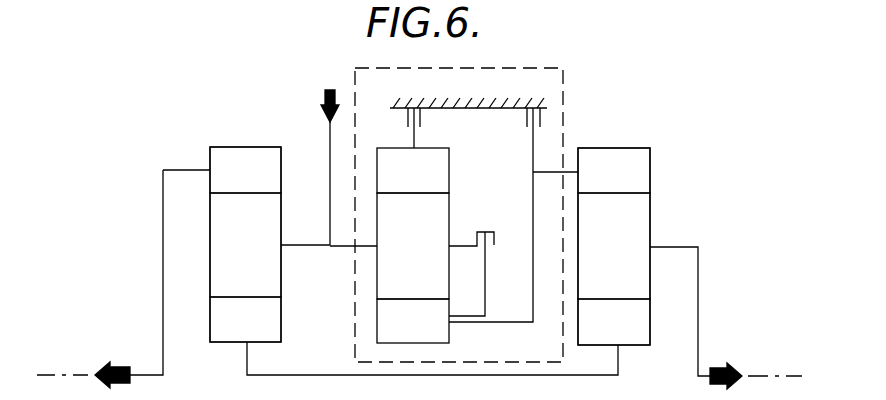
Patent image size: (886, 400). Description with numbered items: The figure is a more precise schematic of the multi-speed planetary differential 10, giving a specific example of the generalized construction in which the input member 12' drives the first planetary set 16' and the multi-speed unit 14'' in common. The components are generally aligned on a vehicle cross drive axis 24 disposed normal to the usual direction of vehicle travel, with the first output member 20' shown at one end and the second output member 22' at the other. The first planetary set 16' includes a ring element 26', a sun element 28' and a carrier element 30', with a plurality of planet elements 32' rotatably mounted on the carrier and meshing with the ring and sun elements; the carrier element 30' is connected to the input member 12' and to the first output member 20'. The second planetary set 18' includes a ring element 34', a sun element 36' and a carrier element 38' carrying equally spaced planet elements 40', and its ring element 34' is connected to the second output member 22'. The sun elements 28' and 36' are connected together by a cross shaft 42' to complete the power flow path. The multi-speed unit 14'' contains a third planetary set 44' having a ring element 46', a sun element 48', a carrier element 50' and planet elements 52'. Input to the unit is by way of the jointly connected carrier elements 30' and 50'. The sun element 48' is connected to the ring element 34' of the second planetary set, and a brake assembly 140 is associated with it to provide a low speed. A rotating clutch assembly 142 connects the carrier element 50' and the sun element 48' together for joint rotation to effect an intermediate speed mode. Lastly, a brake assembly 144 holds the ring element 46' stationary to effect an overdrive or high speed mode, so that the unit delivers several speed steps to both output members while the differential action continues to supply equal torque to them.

The multi-speed planetary differential 10 is at (168, 98).
The input member 12' is at (312, 167).
The multi-speed unit 14'' is at (500, 210).
The first planetary set 16' is at (243, 220).
The second planetary set 18' is at (619, 222).
The first output member 20' is at (152, 279).
The second output member 22' is at (752, 360).
The vehicle cross drive axis 24 is at (71, 372).
The ring element 26' is at (245, 170).
The sun element 28' is at (245, 319).
The carrier element 30' is at (279, 225).
The planet elements 32' is at (245, 245).
The ring element 34' is at (614, 170).
The sun element 36' is at (614, 322).
The carrier element 38' is at (682, 291).
The planet elements 40' is at (614, 246).
The cross shaft 42' is at (432, 356).
The third planetary set 44' is at (461, 130).
The ring element 46' is at (413, 170).
The sun element 48' is at (413, 321).
The carrier element 50' is at (377, 227).
The planet elements 52' is at (413, 246).
The brake assembly 140 is at (520, 120).
The rotating clutch assembly 142 is at (485, 232).
The brake assembly 144 is at (428, 118).